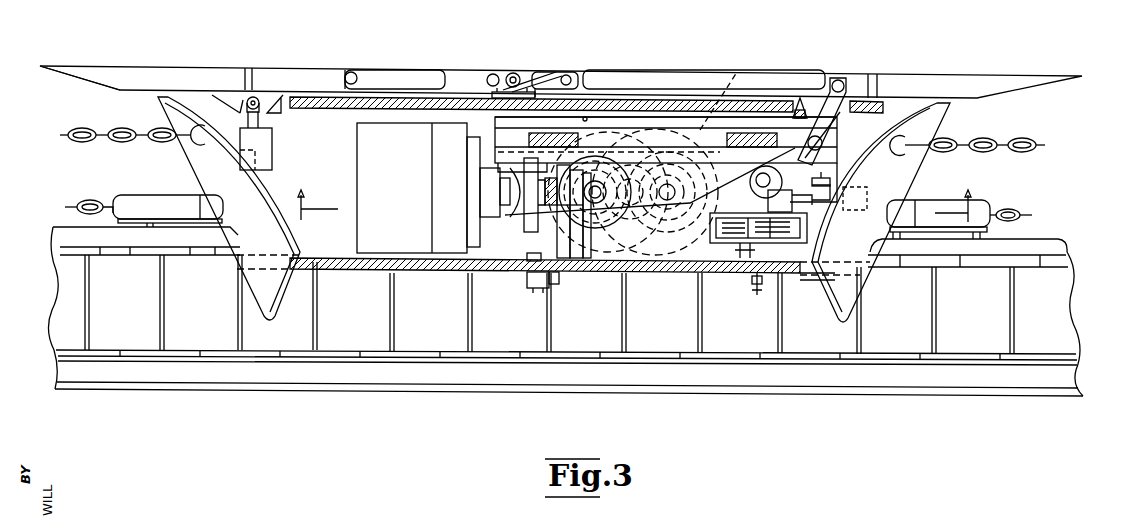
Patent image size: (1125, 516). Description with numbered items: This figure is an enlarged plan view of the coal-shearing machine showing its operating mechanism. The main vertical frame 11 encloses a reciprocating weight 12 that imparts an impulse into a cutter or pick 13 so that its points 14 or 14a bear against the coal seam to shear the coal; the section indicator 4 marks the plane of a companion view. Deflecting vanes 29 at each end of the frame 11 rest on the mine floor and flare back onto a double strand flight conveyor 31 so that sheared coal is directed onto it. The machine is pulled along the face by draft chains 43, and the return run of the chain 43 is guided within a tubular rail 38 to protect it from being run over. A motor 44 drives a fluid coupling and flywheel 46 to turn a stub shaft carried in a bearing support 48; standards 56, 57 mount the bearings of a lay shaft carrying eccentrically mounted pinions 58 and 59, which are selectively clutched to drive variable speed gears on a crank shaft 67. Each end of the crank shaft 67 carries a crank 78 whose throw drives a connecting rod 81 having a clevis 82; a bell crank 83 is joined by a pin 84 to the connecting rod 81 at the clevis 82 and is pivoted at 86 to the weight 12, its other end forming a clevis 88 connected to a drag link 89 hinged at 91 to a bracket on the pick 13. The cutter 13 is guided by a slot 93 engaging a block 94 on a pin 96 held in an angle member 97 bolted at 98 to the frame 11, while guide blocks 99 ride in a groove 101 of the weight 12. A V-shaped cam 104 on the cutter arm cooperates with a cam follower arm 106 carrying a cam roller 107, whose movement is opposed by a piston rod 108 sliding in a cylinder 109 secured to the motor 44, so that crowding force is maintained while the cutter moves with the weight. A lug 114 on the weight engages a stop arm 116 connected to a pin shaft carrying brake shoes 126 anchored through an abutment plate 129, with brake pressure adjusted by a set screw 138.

The main vertical frame 11 is at (692, 122).
The reciprocating weight 12 is at (702, 133).
The cutter or pick 13 is at (652, 72).
The cutter point 14 is at (1022, 73).
The cutter point 14a is at (117, 72).
The deflecting vane 29 is at (233, 203).
The double strand flight conveyor 31 is at (657, 346).
The tubular rail 38 is at (158, 195).
The draft chain 43 is at (63, 141).
The motor 44 is at (343, 238).
The fluid coupling and flywheel 46 is at (530, 215).
The bearing support 48 is at (553, 237).
The standard 56 is at (593, 255).
The standard 57 is at (581, 249).
The eccentrically mounted pinion 58 is at (576, 240).
The eccentrically mounted pinion 59 is at (573, 220).
The crank shaft 67 is at (723, 90).
The crank 78 is at (648, 258).
The connecting rod 81 is at (712, 188).
The clevis 82 is at (790, 140).
The bell crank 83 is at (775, 200).
The pin 84 is at (770, 177).
The pivot 86 is at (800, 158).
The clevis 88 is at (835, 108).
The drag link 89 is at (423, 77).
The hinge connection 91 is at (353, 72).
The slot 93 is at (575, 78).
The block 94 is at (527, 82).
The pin 96 is at (514, 77).
The angle member 97 is at (505, 92).
The bolt 98 is at (535, 92).
The guide block 99 is at (535, 135).
The groove 101 is at (585, 118).
The V-shaped cam 104 is at (270, 112).
The cam follower arm 106 is at (243, 110).
The cam roller 107 is at (258, 95).
The piston rod 108 is at (272, 135).
The cylinder 109 is at (267, 152).
The lug 114 is at (852, 165).
The stop arm 116 is at (867, 190).
The brake shoe 126 is at (786, 273).
The abutment plate 129 is at (733, 250).
The set screw 138 is at (757, 286).
The section line 4 is at (635, 196).